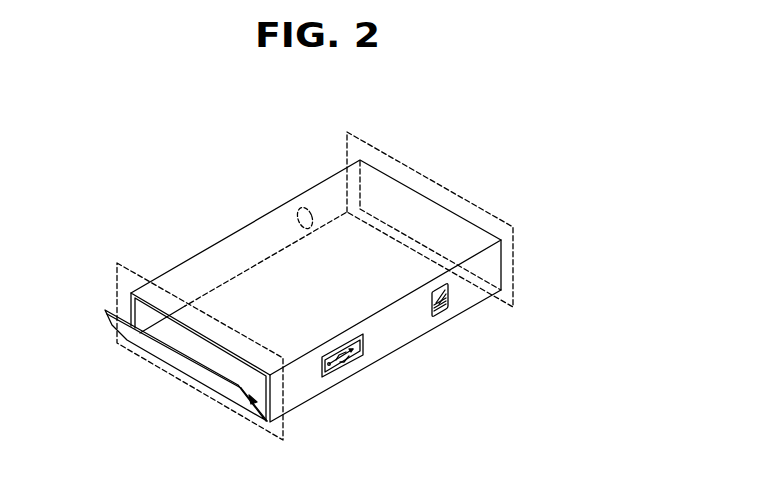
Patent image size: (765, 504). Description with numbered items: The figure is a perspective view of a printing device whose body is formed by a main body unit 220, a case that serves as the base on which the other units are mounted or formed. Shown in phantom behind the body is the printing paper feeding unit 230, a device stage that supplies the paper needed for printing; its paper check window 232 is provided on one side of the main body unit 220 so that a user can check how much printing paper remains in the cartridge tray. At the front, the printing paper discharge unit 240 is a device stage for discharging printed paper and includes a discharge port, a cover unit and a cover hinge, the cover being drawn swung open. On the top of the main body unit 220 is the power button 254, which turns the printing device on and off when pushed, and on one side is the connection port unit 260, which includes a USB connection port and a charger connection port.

The main body unit 220 is at (242, 235).
The printing paper feeding unit 230 is at (412, 170).
The paper check window 232 is at (443, 312).
The printing paper discharge unit 240 is at (133, 272).
The power button 254 is at (301, 207).
The connection port unit 260 is at (355, 360).